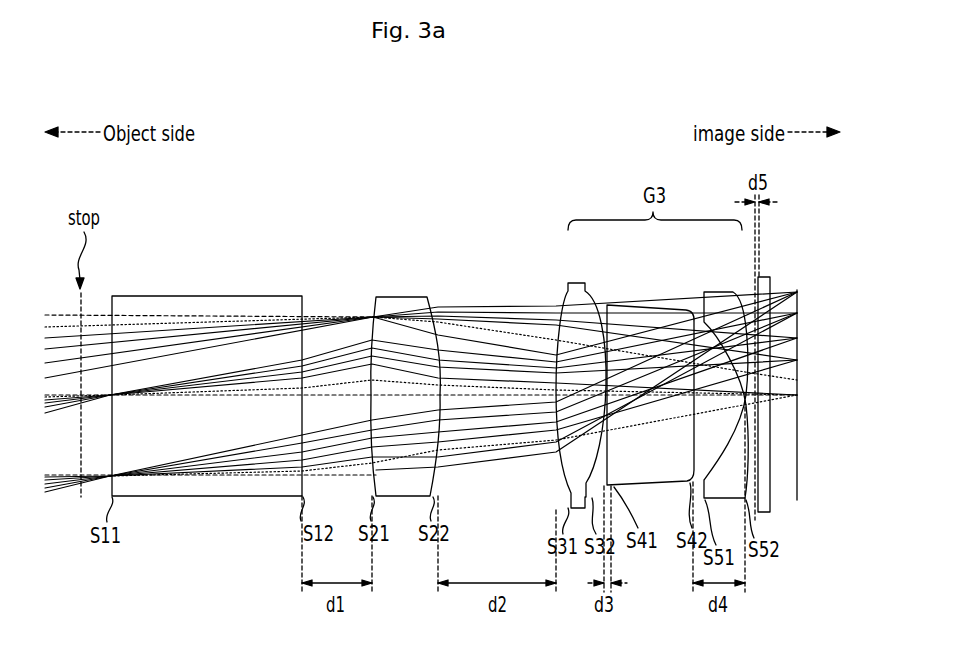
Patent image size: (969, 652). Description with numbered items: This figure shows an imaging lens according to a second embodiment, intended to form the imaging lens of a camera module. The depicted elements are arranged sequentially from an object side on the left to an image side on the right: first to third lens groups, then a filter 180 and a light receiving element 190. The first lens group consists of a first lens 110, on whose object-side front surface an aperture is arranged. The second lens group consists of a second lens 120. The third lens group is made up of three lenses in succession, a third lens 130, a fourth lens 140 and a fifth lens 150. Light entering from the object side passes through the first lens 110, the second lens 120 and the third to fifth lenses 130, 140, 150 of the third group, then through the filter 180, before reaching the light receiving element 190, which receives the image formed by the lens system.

The first lens 110 is at (258, 296).
The second lens 120 is at (398, 297).
The third lens 130 is at (575, 283).
The fourth lens 140 is at (656, 307).
The fifth lens 150 is at (724, 292).
The filter 180 is at (768, 418).
The light receiving element 190 is at (798, 434).